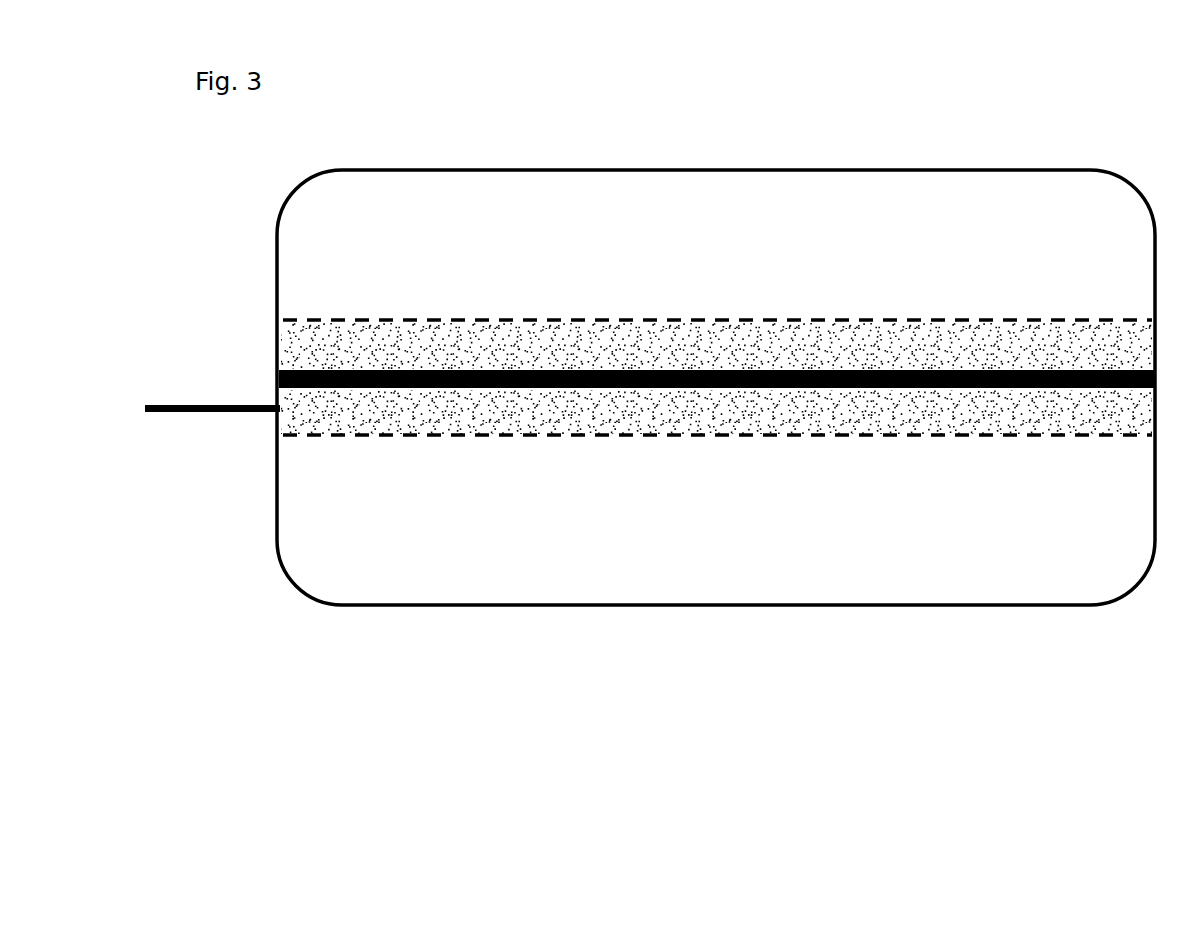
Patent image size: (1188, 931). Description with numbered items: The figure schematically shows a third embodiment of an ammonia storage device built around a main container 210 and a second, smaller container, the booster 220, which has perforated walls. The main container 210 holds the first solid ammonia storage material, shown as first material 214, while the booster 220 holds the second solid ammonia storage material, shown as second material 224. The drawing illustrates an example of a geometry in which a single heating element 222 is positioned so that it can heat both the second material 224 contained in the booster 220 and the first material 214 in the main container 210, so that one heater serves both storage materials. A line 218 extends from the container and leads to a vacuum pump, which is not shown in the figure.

The main container 210 is at (558, 168).
The first material 214 is at (677, 253).
The line 218 is at (173, 411).
The booster 220 is at (905, 330).
The heating element 222 is at (278, 378).
The second material 224 is at (716, 378).